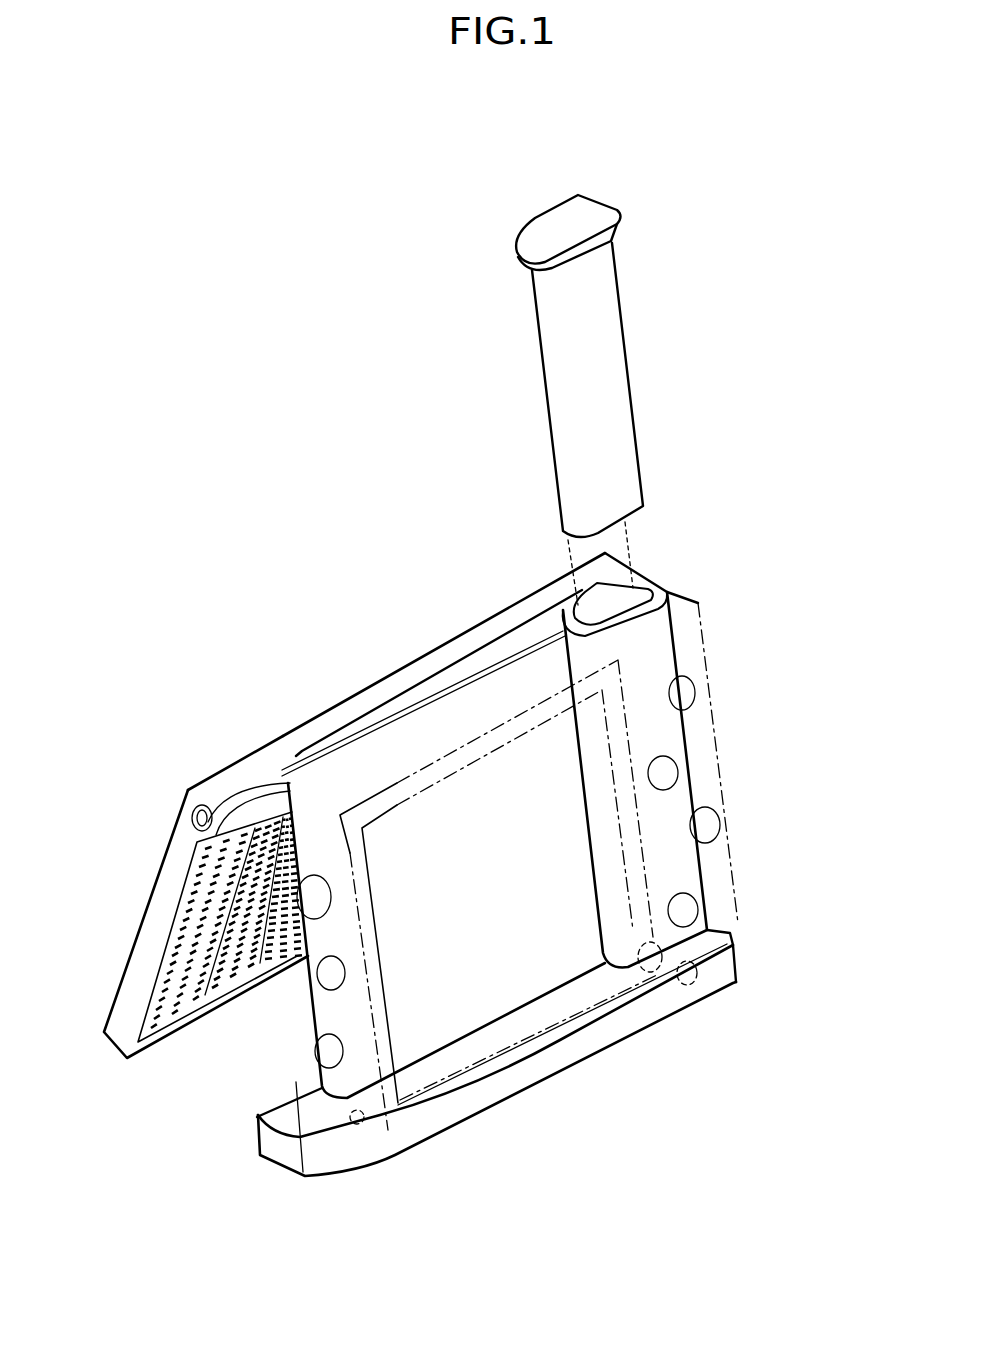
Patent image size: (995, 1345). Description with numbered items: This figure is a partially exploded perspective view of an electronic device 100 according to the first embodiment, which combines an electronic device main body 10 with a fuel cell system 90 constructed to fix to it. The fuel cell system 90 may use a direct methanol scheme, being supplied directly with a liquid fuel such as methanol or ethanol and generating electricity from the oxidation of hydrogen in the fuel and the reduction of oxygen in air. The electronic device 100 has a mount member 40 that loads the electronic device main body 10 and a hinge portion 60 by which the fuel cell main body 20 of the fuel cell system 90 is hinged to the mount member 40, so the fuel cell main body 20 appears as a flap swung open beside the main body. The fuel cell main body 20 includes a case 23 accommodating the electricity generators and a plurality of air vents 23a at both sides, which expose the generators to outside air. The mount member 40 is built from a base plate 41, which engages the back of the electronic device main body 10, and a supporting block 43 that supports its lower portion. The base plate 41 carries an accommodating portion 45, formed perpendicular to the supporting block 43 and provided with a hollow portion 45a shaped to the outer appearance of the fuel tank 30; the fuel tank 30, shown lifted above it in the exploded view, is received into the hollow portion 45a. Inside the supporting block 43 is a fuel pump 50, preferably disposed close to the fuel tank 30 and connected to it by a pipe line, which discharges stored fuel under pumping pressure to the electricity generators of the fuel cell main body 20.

The electronic device 100 is at (382, 369).
The electronic device main body 10 is at (717, 712).
The fuel cell main body 20 is at (185, 902).
The case 23 is at (182, 974).
The air vents 23a is at (172, 974).
The fuel tank 30 is at (602, 371).
The mount member 40 is at (293, 1010).
The base plate 41 is at (542, 958).
The supporting block 43 is at (441, 1122).
The accommodating portion 45 is at (665, 592).
The hollow portion 45a is at (637, 583).
The fuel pump 50 is at (695, 985).
The hinge portion 60 is at (383, 689).
The fuel cell system 90 is at (200, 742).